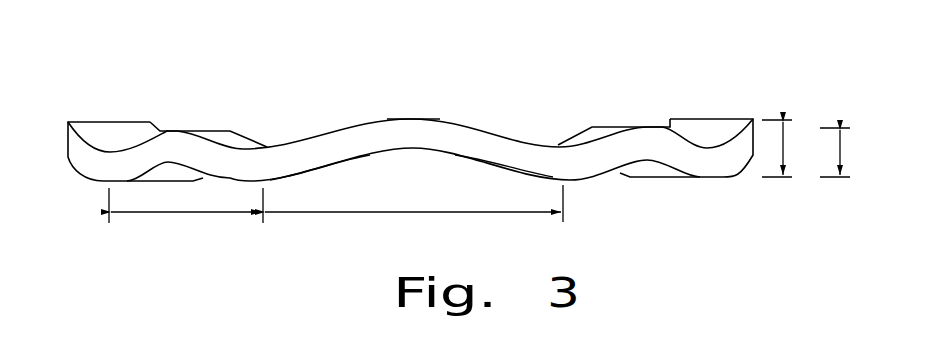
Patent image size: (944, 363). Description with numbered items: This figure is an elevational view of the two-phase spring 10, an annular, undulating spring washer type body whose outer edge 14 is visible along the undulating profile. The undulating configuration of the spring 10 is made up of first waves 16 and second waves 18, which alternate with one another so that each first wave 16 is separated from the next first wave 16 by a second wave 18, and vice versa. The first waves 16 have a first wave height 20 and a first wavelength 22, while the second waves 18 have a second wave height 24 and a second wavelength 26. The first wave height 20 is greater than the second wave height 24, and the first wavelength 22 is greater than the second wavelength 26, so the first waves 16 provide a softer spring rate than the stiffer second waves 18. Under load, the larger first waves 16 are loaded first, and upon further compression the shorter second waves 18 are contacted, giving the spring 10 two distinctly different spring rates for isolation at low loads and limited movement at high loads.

The two-phase spring 10 is at (394, 106).
The outer edge 14 is at (443, 137).
The first waves 16 is at (410, 118).
The second waves 18 is at (177, 128).
The first wave height 20 is at (787, 147).
The first wavelength 22 is at (397, 212).
The second wave height 24 is at (840, 150).
The second wavelength 26 is at (187, 213).